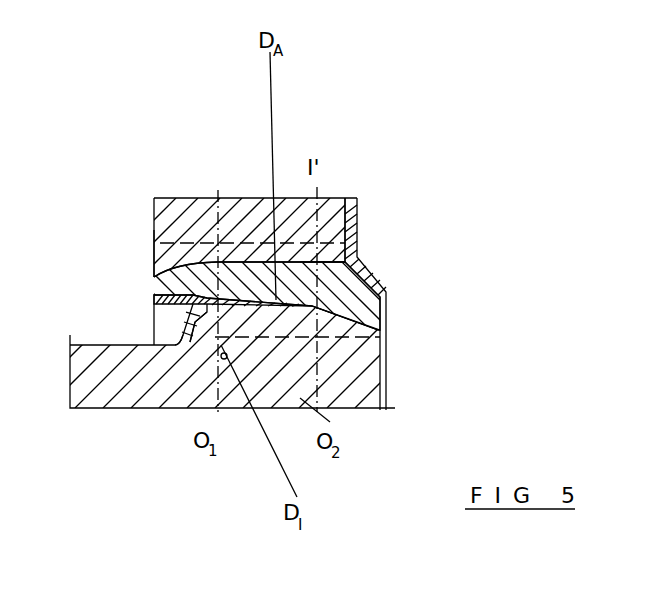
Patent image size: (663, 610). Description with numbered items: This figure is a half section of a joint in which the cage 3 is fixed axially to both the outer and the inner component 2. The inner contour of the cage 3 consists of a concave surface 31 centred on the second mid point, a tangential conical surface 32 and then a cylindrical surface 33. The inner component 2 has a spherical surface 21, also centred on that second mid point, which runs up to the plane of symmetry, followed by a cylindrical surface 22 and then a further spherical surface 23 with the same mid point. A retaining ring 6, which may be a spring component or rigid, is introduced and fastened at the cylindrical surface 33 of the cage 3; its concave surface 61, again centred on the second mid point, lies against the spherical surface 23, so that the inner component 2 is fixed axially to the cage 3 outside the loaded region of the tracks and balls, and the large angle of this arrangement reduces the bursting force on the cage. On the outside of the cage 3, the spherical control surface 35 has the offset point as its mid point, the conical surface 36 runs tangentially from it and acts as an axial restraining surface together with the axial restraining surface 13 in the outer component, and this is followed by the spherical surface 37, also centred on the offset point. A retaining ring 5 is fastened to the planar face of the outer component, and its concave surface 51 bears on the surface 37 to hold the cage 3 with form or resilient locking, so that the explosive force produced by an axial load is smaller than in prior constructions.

The inner component 2 is at (368, 380).
The cage 3 is at (160, 288).
The retaining ring 5 is at (425, 241).
The ring 6 is at (154, 305).
The axial restraining surface 13 is at (364, 212).
The spherical surface 21 is at (377, 330).
The cylindrical surface 22 is at (221, 353).
The spherical surface 23 is at (172, 347).
The concave surface 31 is at (377, 330).
The tangential conical surface 32 is at (232, 320).
The cylindrical surface 33 is at (150, 347).
The spherical control surface 35 is at (182, 258).
The conical surface 36 is at (332, 262).
The spherical surface 37 is at (387, 293).
The concave surface 51 is at (368, 271).
The concave surface 61 is at (192, 333).